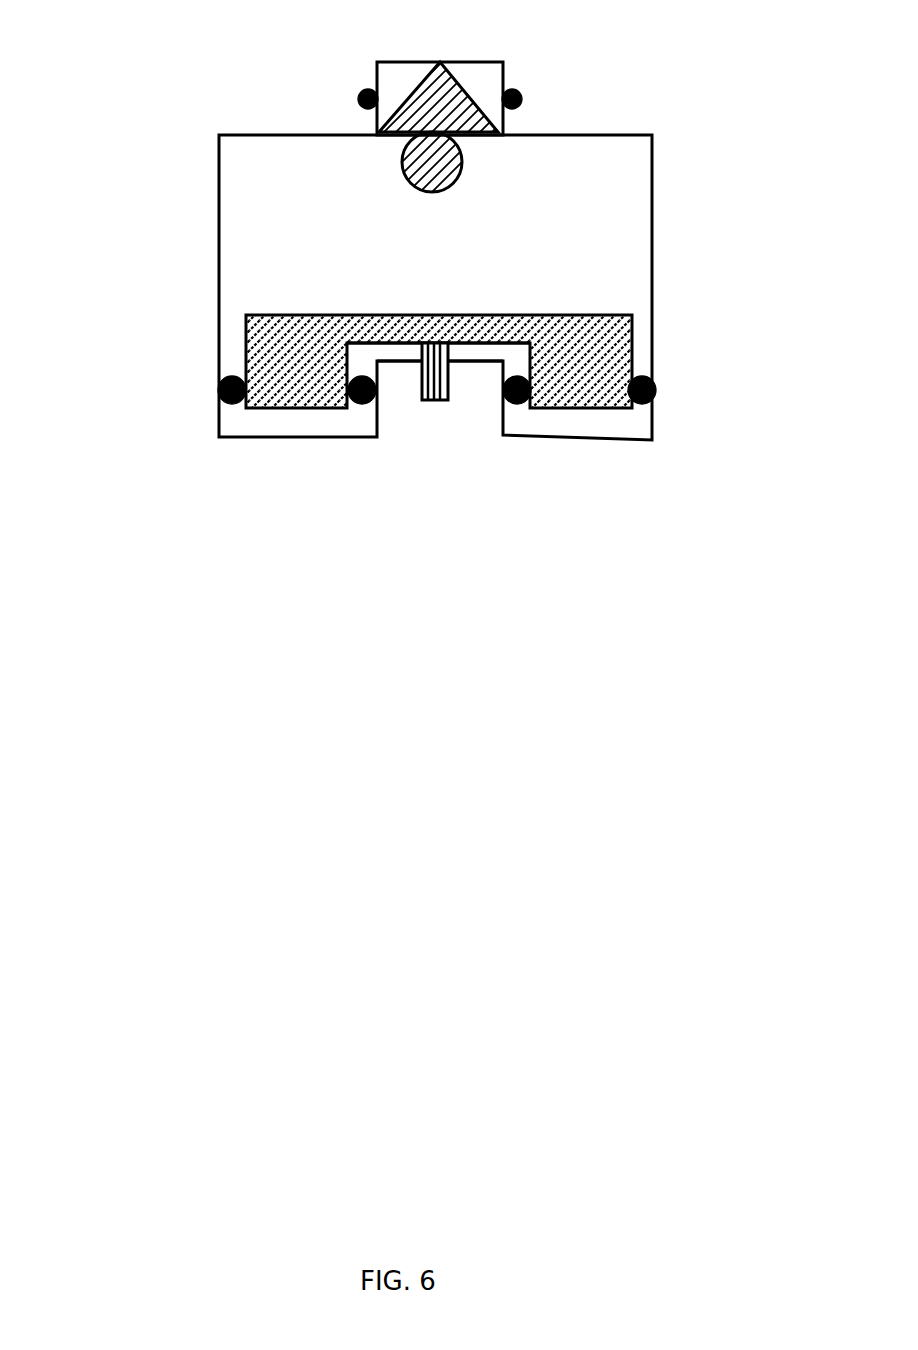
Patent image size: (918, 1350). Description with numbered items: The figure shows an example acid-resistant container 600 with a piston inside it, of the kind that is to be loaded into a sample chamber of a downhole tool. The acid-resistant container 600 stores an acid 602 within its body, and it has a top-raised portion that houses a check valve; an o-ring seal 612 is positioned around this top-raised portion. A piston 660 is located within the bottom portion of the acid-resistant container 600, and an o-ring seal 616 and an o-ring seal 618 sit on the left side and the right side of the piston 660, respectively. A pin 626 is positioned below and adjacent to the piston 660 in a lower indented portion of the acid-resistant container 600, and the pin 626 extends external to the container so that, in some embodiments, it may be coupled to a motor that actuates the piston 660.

The acid-resistant container 600 is at (219, 192).
The acid 602 is at (481, 259).
The o-ring seal 612 is at (368, 99).
The o-ring seal 616 is at (222, 392).
The o-ring seal 618 is at (652, 386).
The pin 626 is at (448, 345).
The piston 660 is at (300, 312).